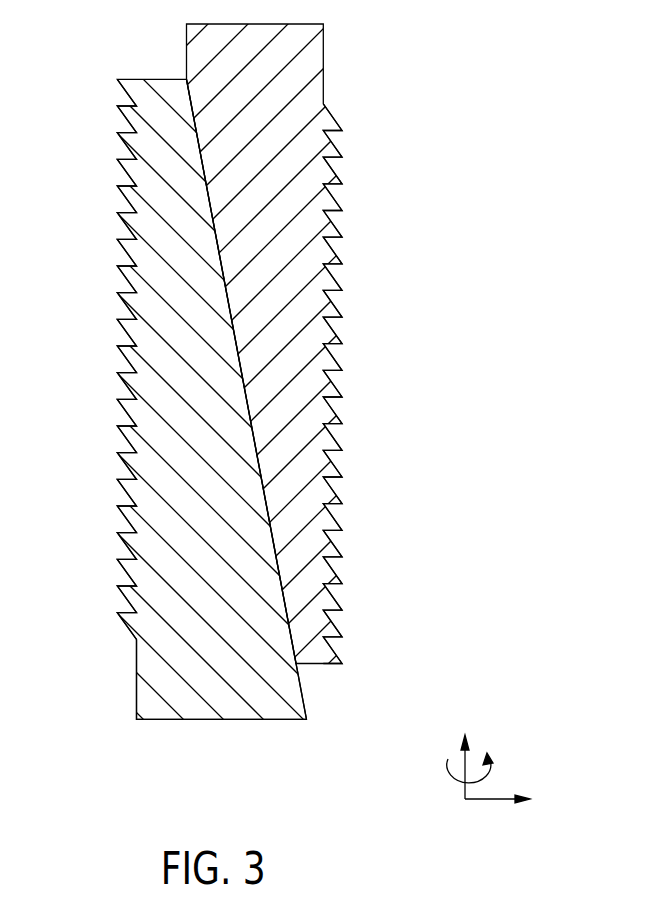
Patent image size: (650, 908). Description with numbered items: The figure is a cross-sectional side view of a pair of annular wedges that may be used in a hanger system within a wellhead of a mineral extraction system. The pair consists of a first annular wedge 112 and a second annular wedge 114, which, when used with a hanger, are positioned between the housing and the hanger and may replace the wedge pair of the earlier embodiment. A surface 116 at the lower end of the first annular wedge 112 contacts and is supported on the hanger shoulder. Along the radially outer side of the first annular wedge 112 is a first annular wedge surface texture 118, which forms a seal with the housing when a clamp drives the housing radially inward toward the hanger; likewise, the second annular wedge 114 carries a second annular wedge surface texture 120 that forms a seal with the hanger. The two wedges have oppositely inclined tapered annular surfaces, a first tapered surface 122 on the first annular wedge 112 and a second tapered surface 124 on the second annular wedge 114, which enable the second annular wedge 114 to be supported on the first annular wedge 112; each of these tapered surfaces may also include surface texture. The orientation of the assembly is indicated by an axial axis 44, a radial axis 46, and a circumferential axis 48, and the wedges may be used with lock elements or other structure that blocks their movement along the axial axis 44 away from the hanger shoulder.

The first annular wedge 112 is at (138, 164).
The second annular wedge 114 is at (303, 190).
The surface 116 is at (206, 720).
The first annular wedge surface texture 118 is at (120, 442).
The second annular wedge surface texture 120 is at (334, 340).
The first tapered surface 122 is at (232, 320).
The second tapered surface 124 is at (244, 383).
The axial axis 44 is at (463, 761).
The radial axis 46 is at (490, 802).
The circumferential axis 48 is at (449, 785).